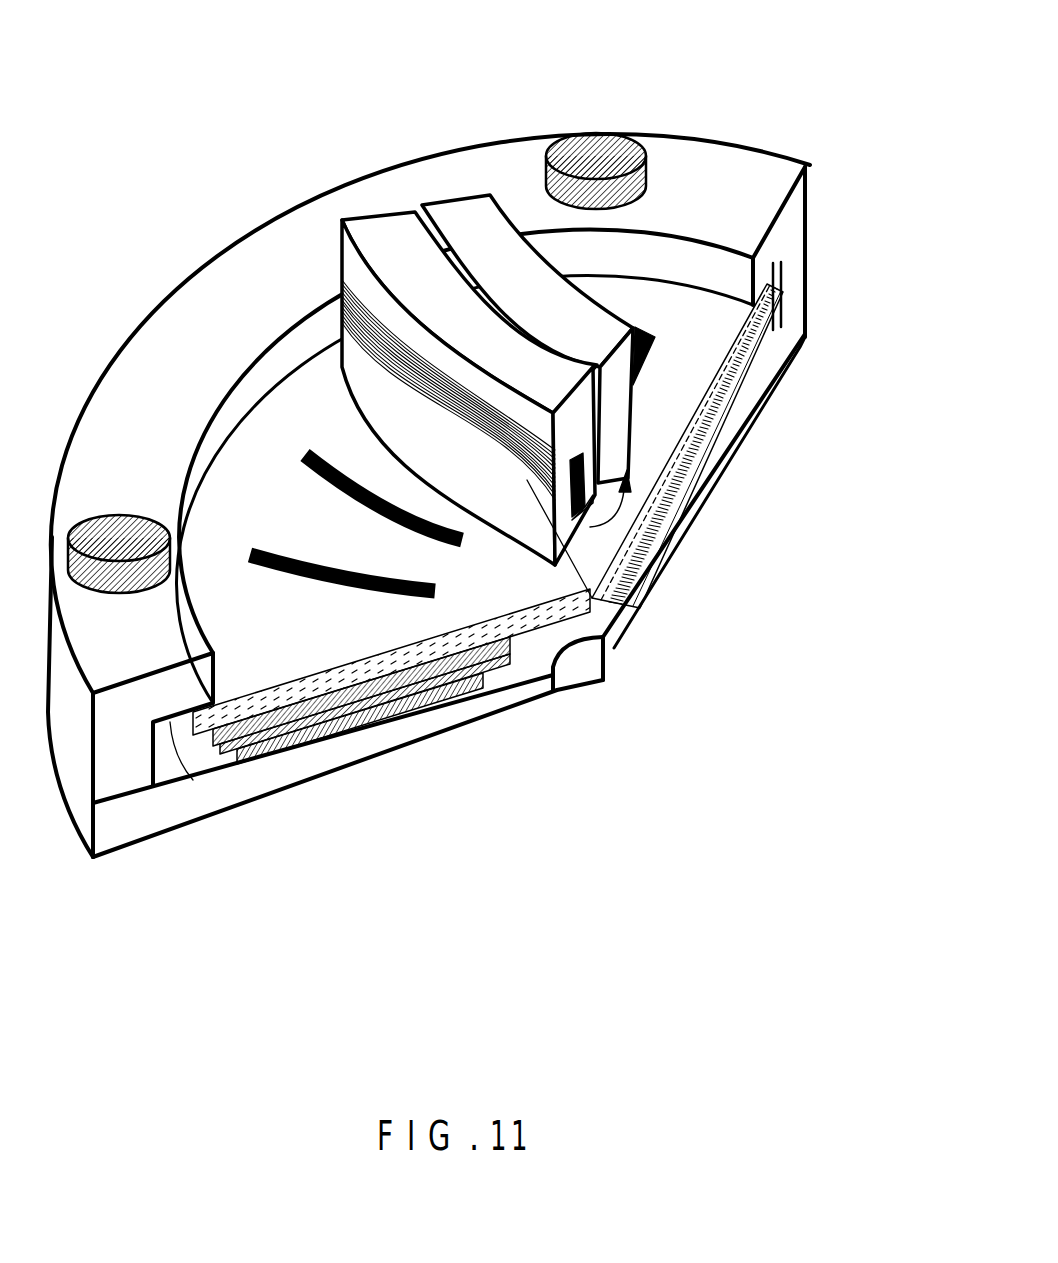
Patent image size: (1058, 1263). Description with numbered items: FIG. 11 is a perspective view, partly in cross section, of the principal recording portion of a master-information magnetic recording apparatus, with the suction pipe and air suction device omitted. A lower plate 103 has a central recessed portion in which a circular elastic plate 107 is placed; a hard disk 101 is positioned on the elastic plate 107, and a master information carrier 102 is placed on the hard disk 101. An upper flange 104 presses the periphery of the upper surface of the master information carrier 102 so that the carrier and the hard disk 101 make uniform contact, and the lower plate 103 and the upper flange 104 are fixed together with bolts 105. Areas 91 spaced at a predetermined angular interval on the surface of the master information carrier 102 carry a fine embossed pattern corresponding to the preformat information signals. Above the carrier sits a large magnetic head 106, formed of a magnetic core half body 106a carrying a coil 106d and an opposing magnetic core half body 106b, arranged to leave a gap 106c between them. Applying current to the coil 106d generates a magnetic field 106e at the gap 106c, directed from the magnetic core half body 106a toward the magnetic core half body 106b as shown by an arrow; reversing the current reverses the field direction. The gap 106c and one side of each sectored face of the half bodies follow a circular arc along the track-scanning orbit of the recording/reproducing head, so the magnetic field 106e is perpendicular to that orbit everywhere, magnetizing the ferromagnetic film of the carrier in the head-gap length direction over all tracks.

The areas 91 is at (257, 543).
The hard disk 101 is at (453, 707).
The master information carrier 102 is at (553, 693).
The lower plate 103 is at (373, 753).
The upper flange 104 is at (275, 250).
The bolts 105 is at (570, 135).
The large magnetic head 106 is at (553, 391).
The magnetic core half body 106a is at (367, 230).
The magnetic core half body 106b is at (603, 325).
The gap 106c is at (602, 507).
The coil 106d is at (612, 650).
The magnetic field 106e is at (643, 557).
The elastic plate 107 is at (293, 780).